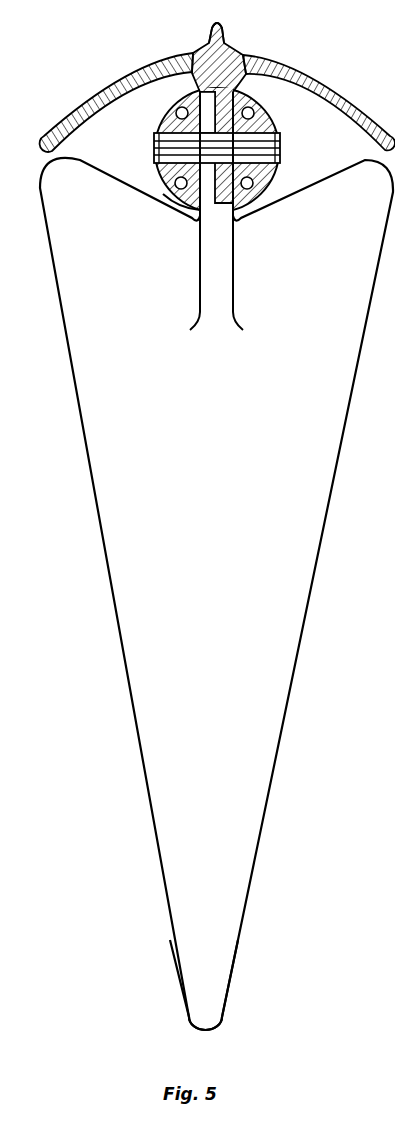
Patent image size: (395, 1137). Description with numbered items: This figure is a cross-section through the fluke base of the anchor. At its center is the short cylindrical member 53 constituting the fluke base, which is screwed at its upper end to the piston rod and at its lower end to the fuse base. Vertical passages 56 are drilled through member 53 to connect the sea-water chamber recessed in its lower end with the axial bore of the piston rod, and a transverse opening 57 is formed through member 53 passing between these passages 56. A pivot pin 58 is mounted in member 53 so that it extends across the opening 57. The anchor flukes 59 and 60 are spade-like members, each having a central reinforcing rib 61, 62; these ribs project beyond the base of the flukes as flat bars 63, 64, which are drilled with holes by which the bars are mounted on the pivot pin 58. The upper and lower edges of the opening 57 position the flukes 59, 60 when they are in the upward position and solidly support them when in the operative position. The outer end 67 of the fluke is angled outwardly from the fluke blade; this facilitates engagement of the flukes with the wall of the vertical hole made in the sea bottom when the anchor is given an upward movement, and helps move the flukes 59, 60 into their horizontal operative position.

The cylindrical member 53 is at (159, 124).
The vertical passages 56 is at (174, 109).
The transverse opening 57 is at (238, 92).
The pivot pin 58 is at (281, 147).
The anchor fluke 59 is at (62, 298).
The anchor fluke 60 is at (277, 63).
The central reinforcing rib 61 is at (200, 250).
The central reinforcing rib 62 is at (225, 33).
The flat bar 63 is at (170, 192).
The flat bar 64 is at (193, 97).
The outer end of fluke 67 is at (172, 943).